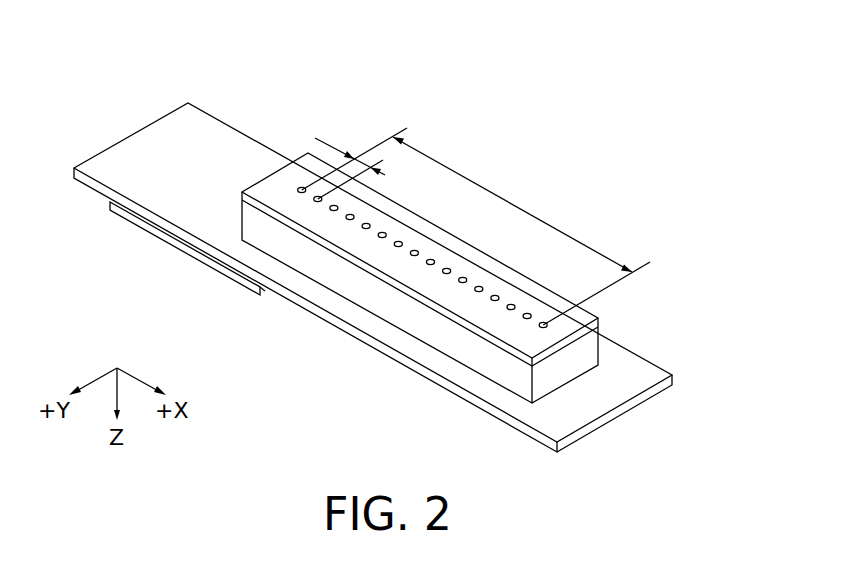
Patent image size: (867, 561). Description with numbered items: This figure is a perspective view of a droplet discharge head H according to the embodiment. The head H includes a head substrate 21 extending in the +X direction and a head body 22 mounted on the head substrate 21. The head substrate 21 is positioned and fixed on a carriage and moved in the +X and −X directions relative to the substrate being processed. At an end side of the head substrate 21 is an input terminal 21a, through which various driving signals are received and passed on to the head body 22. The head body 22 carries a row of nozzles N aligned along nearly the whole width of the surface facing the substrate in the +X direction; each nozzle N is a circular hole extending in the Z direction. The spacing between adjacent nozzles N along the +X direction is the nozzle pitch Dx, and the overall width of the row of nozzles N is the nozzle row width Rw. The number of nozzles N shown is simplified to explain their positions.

The droplet discharge head H is at (121, 105).
The head substrate 21 is at (673, 376).
The input terminal 21a is at (128, 220).
The head body 22 is at (599, 337).
The nozzles N is at (527, 314).
The nozzle pitch Dx is at (354, 161).
The nozzle row width Rw is at (521, 231).